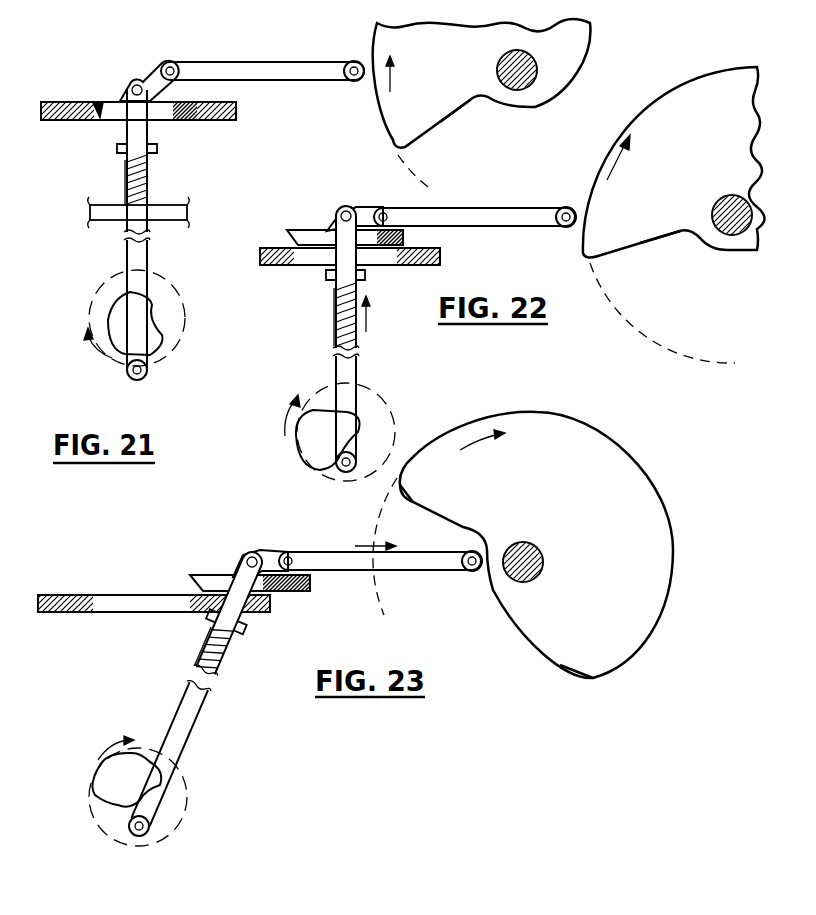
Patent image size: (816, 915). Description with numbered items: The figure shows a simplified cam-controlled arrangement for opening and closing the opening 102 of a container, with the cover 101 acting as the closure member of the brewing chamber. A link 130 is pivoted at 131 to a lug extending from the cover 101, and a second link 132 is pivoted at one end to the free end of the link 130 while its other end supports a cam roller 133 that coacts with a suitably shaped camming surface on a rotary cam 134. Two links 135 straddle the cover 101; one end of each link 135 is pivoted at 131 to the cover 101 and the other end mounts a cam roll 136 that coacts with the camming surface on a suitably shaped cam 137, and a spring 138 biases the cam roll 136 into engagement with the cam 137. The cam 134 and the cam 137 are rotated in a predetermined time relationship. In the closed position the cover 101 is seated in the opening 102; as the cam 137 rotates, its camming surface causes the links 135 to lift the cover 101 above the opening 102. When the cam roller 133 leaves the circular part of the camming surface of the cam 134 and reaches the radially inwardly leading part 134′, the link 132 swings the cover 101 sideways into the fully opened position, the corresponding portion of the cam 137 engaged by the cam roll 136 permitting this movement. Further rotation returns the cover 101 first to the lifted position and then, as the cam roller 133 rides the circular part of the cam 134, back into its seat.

In FIG. 21, the cover 101 is at (93, 106).
In FIG. 22, the cover 101 is at (298, 233).
In FIG. 23, the cover 101 is at (280, 584).
In FIG. 21, the opening 102 is at (70, 121).
In FIG. 22, the opening 102 is at (385, 266).
In FIG. 23, the opening 102 is at (92, 595).
In FIG. 21, the link 130 is at (148, 77).
In FIG. 22, the link 130 is at (365, 213).
In FIG. 23, the link 130 is at (270, 555).
In FIG. 21, the pivot 131 is at (130, 86).
In FIG. 21, the second link 132 is at (292, 54).
In FIG. 22, the second link 132 is at (443, 221).
In FIG. 23, the second link 132 is at (412, 566).
In FIG. 21, the cam roller 133 is at (349, 83).
In FIG. 22, the cam roller 133 is at (567, 232).
In FIG. 23, the cam roller 133 is at (473, 573).
In FIG. 21, the rotary cam 134 is at (378, 36).
In FIG. 22, the rotary cam 134 is at (663, 90).
In FIG. 23, the rotary cam 134 is at (643, 497).
In FIG. 21, the radially inwardly leading part 134′ is at (463, 110).
In FIG. 22, the radially inwardly leading part 134′ is at (643, 248).
In FIG. 23, the radially inwardly leading part 134′ is at (413, 500).
In FIG. 21, the links 135 is at (142, 253).
In FIG. 22, the links 135 is at (350, 375).
In FIG. 23, the links 135 is at (168, 738).
In FIG. 21, the cam roll 136 is at (132, 381).
In FIG. 22, the cam roll 136 is at (338, 473).
In FIG. 23, the cam roll 136 is at (140, 837).
In FIG. 21, the cam 137 is at (160, 344).
In FIG. 22, the cam 137 is at (308, 448).
In FIG. 23, the cam 137 is at (102, 772).
In FIG. 21, the spring 138 is at (127, 153).
In FIG. 22, the spring 138 is at (340, 303).
In FIG. 23, the spring 138 is at (217, 635).